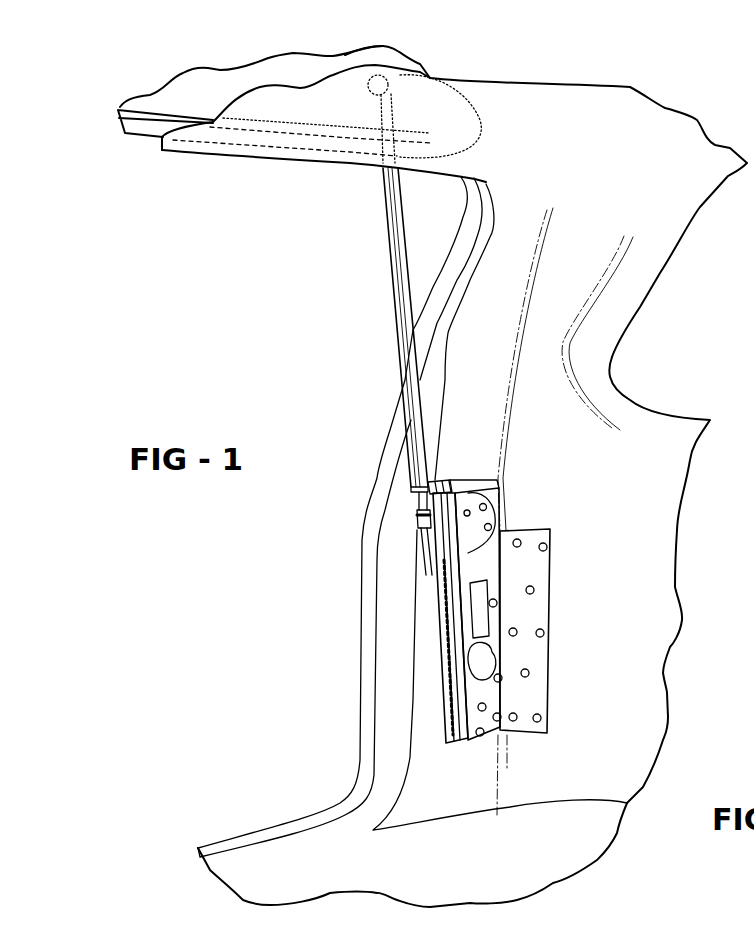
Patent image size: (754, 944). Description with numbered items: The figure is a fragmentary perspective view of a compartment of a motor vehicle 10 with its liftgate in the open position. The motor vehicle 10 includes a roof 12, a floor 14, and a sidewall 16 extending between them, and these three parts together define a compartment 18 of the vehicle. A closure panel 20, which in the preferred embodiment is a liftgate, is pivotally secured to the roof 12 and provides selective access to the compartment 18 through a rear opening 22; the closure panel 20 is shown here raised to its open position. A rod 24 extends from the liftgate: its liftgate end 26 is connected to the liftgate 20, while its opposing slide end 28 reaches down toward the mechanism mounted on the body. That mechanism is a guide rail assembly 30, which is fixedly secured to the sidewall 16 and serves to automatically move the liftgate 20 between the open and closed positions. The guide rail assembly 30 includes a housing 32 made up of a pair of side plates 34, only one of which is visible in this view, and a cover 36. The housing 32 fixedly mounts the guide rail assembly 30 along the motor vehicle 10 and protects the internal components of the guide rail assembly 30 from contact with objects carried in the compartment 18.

The motor vehicle 10 is at (374, 588).
The roof 12 is at (546, 141).
The floor 14 is at (434, 886).
The sidewall 16 is at (677, 420).
The compartment 18 is at (698, 163).
The closure panel 20 is at (413, 67).
The rear opening 22 is at (442, 270).
The rod 24 is at (393, 286).
The liftgate end 26 is at (375, 143).
The slide end 28 is at (415, 481).
The guide rail assembly 30 is at (413, 685).
The housing 32 is at (493, 468).
The side plates 34 is at (498, 740).
The cover 36 is at (460, 482).